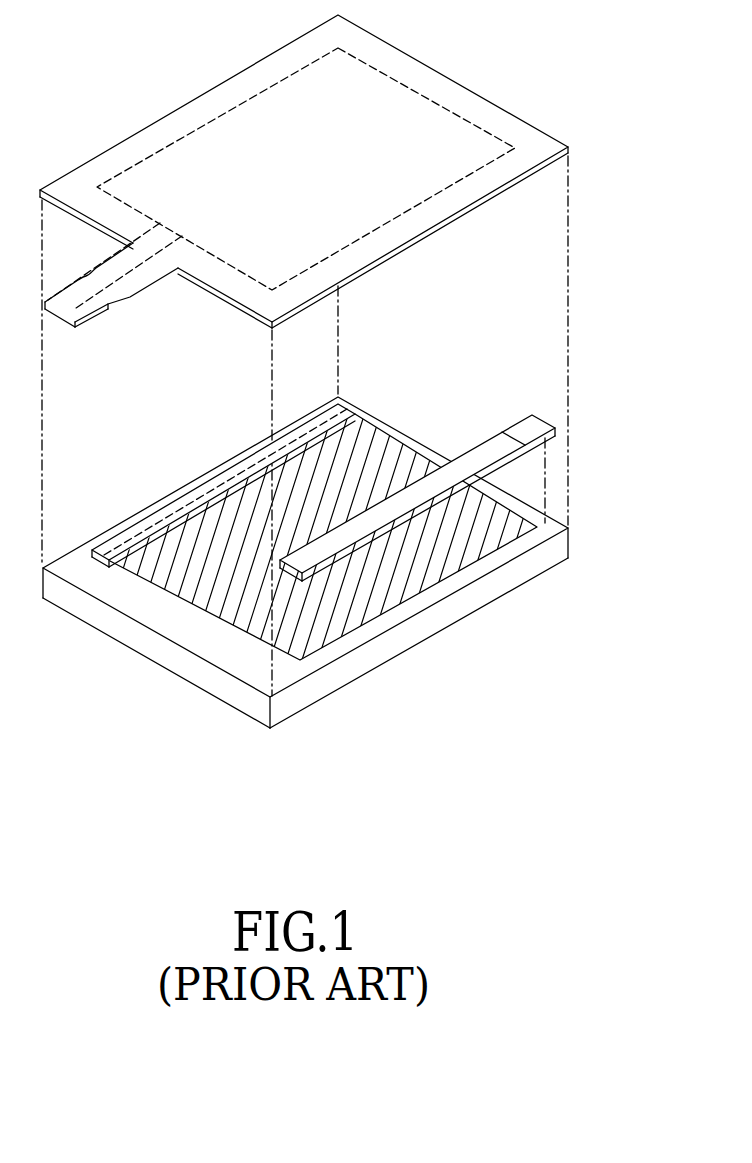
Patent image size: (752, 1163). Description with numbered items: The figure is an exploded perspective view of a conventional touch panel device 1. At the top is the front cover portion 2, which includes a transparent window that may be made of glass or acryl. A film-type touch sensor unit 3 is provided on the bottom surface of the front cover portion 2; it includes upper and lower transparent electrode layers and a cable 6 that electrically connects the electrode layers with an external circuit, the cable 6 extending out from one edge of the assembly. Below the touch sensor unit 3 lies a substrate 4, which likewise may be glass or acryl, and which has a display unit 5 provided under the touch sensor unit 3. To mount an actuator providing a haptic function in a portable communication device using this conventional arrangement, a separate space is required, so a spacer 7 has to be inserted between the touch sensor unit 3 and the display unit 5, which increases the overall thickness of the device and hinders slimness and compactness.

The touch panel device 1 is at (559, 77).
The front cover portion 2 is at (190, 100).
The touch sensor unit 3 is at (402, 112).
The substrate 4 is at (497, 580).
The display unit 5 is at (398, 606).
The cable 6 is at (140, 280).
The spacer 7 is at (530, 428).